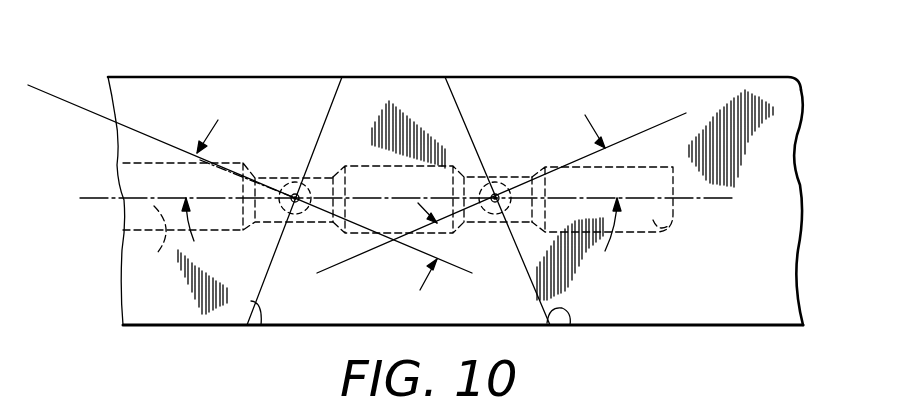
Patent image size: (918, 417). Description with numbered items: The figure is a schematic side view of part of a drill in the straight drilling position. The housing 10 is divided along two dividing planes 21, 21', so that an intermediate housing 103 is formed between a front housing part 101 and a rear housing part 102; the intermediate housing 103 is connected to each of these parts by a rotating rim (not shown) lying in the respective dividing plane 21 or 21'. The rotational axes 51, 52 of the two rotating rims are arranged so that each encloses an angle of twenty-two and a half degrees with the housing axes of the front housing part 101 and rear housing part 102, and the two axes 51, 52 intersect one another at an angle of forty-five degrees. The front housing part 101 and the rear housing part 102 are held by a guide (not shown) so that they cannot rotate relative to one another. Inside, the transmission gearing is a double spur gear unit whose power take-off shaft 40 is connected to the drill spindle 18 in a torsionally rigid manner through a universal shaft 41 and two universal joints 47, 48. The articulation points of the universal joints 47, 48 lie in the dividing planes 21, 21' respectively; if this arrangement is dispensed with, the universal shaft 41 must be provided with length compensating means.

The housing 10 is at (789, 75).
The front housing part 101 is at (173, 98).
The rear housing part 102 is at (775, 170).
The intermediate housing 103 is at (362, 90).
The rotational axis of rotating rim 51 is at (75, 100).
The rotational axis of rotating rim 52 is at (657, 127).
The universal joint 47 is at (293, 166).
The universal joint 48 is at (508, 162).
The universal shaft 41 is at (370, 178).
The power take-off shaft 40 is at (665, 243).
The drill spindle 18 is at (167, 246).
The dividing plane 21 is at (231, 335).
The dividing plane 21' is at (579, 338).